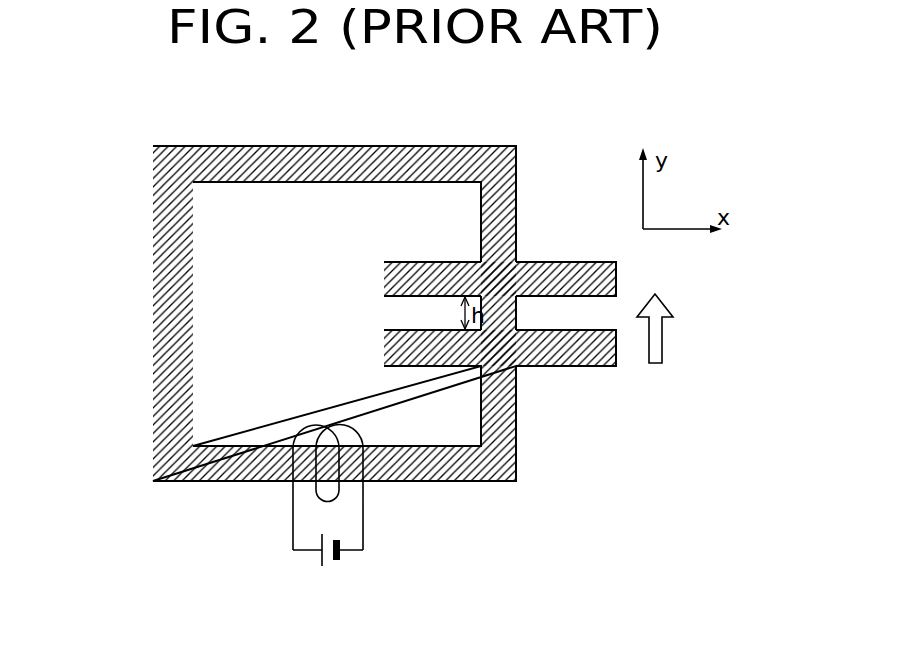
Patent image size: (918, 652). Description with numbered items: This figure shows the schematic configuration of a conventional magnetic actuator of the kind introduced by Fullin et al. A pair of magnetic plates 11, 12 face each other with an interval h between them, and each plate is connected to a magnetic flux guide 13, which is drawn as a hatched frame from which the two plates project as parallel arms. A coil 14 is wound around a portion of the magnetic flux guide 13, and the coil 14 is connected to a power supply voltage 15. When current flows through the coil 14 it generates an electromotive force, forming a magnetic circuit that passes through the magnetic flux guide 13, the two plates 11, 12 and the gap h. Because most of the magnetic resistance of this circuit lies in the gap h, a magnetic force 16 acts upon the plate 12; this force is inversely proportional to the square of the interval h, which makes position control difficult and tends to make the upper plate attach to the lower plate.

The magnetic plate 11 is at (398, 276).
The magnetic plate 12 is at (400, 350).
The magnetic flux guide 13 is at (168, 162).
The coil 14 is at (350, 492).
The power supply voltage 15 is at (347, 562).
The magnetic force 16 is at (655, 377).